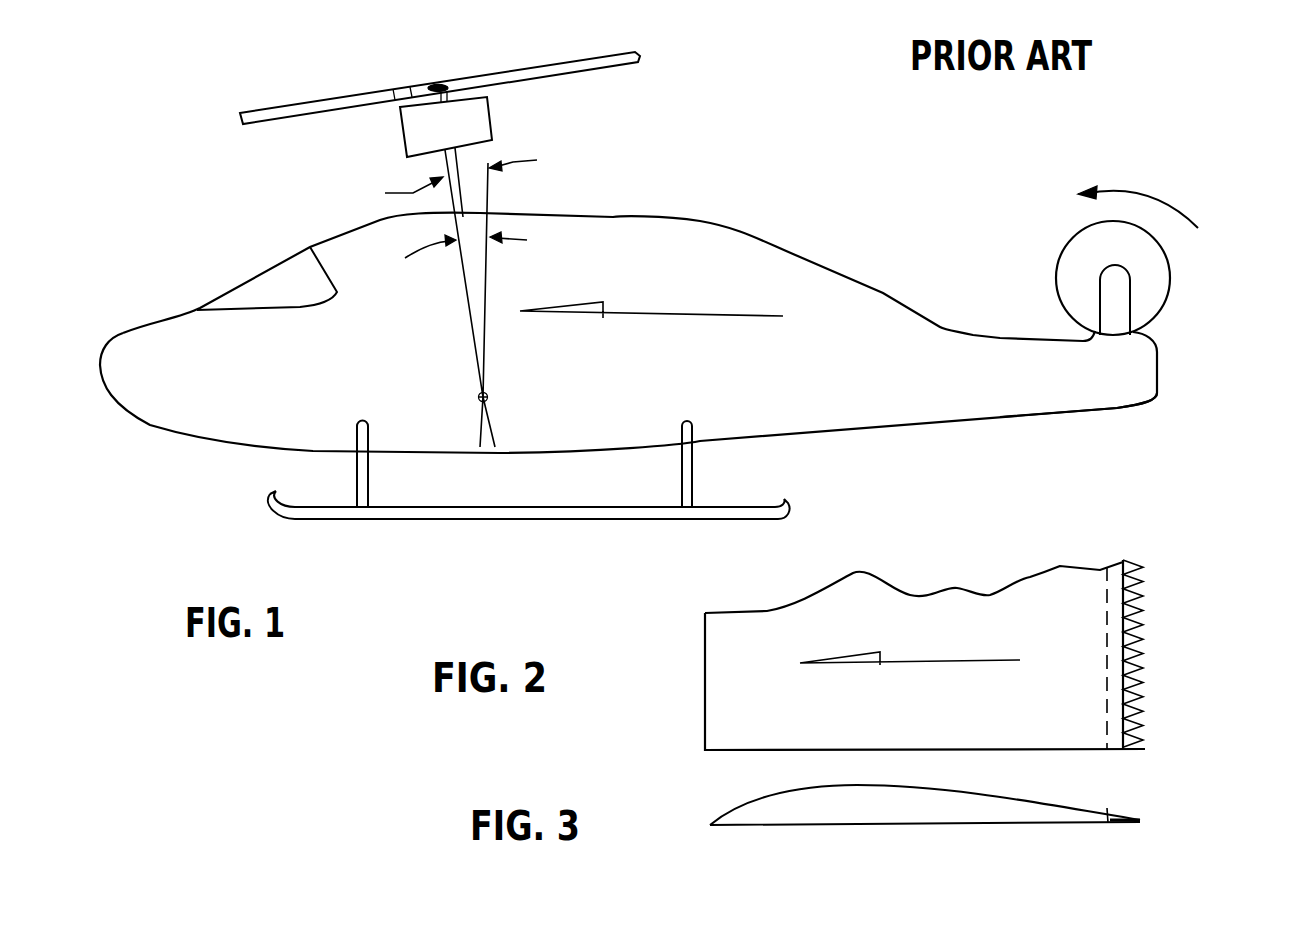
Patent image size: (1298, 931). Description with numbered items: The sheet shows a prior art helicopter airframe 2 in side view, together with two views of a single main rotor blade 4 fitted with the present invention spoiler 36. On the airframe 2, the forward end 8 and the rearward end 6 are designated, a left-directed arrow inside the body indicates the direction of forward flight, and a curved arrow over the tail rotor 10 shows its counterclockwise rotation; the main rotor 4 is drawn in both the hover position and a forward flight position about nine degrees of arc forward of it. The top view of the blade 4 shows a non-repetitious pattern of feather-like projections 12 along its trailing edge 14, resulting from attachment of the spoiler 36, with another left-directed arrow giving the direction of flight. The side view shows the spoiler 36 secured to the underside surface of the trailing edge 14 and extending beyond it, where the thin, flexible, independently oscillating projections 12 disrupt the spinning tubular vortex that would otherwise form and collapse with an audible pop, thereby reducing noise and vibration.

In FIG. 1, the helicopter airframe 2 is at (792, 268).
In FIG. 1, the main rotor blade 4 is at (643, 57).
In FIG. 2, the main rotor blade 4 is at (720, 675).
In FIG. 3, the main rotor blade 4 is at (808, 812).
In FIG. 1, the rearward end 6 is at (1125, 428).
In FIG. 1, the forward end 8 is at (99, 310).
In FIG. 1, the tail rotor 10 is at (1160, 297).
In FIG. 2, the feather-like projections 12 is at (1167, 668).
In FIG. 2, the trailing edge 14 is at (1076, 545).
In FIG. 3, the spoiler 36 is at (1144, 834).